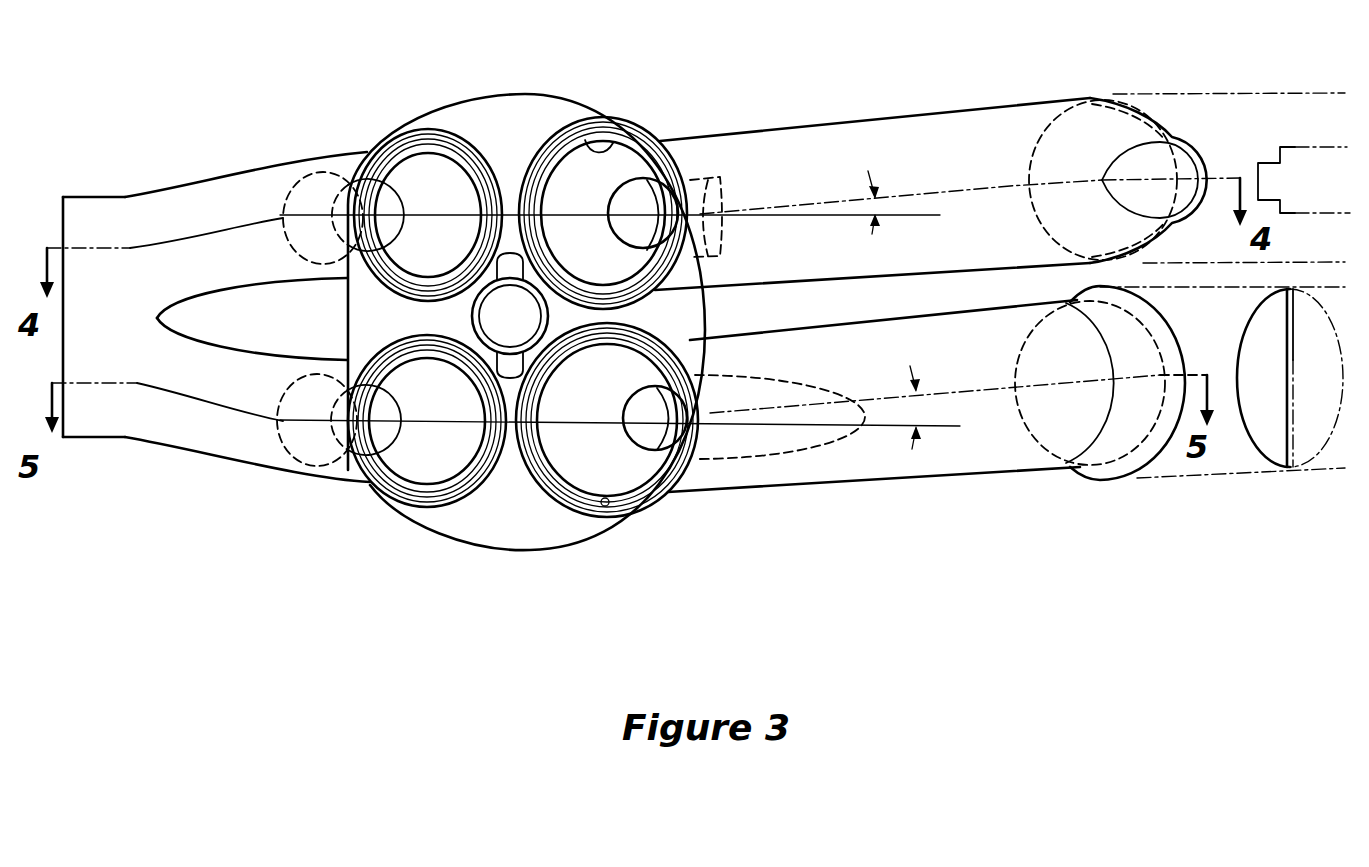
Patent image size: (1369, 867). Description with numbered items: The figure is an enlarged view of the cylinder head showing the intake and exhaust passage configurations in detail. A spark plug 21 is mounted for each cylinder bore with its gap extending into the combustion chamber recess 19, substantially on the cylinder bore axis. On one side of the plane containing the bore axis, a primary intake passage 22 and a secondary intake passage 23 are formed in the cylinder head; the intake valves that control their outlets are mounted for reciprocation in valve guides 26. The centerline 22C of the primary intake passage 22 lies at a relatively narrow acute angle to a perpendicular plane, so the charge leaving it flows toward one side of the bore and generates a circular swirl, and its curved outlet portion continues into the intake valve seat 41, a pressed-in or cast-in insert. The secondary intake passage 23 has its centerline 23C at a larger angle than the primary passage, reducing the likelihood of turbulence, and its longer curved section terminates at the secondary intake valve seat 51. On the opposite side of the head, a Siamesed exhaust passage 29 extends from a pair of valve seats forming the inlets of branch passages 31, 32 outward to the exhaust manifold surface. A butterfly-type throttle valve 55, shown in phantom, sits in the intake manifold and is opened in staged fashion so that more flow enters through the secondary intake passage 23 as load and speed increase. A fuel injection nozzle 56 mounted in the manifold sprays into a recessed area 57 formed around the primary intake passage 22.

The combustion chamber recess 19 is at (507, 122).
The spark plug 21 is at (500, 320).
The primary intake passage 22 is at (803, 133).
The centerline of the primary intake passage 22C is at (922, 192).
The secondary intake passage 23 is at (872, 457).
The centerline of the secondary intake passage 23C is at (892, 390).
The valve guides 26 is at (633, 204).
The Siamesed exhaust passage 29 is at (124, 306).
The branch passage 31 is at (226, 175).
The branch passage 32 is at (238, 455).
The intake valve seat 41 is at (613, 143).
The secondary intake valve seat 51 is at (608, 506).
The butterfly-type throttle valve 55 is at (1258, 450).
The fuel injection nozzle 56 is at (1313, 143).
The recessed area 57 is at (1135, 167).